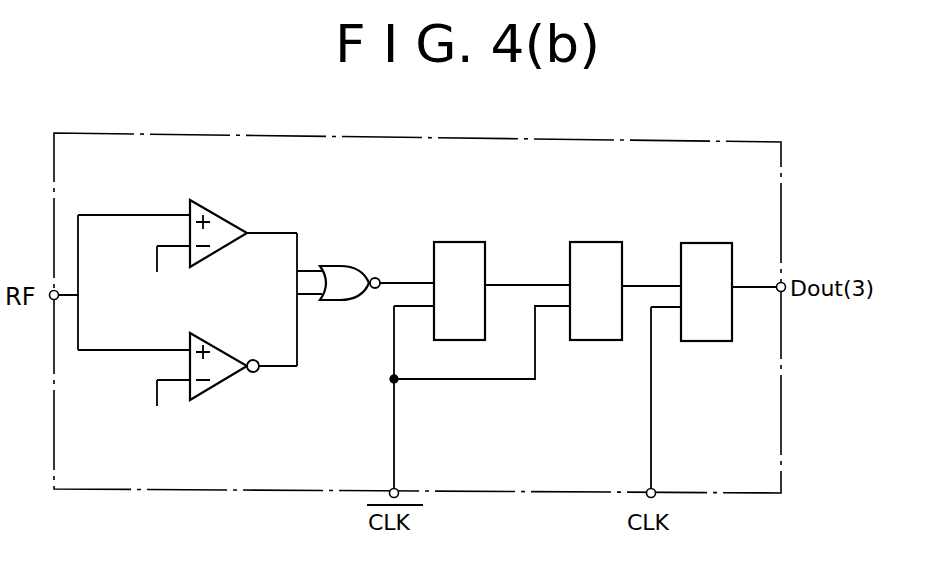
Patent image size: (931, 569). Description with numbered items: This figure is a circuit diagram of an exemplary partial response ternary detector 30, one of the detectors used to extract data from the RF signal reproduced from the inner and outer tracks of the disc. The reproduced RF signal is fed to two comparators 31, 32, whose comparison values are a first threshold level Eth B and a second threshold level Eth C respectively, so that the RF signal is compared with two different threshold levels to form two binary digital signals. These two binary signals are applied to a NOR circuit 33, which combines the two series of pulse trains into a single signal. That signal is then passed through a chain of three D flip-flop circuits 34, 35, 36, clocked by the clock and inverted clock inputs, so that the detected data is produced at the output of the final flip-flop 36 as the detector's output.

The partial response ternary detector 30 is at (640, 141).
The comparator 31 is at (233, 222).
The comparator 32 is at (241, 379).
The NOR circuit 33 is at (352, 266).
The D flip-flop circuit 34 is at (470, 242).
The D flip-flop circuit 35 is at (612, 242).
The D flip-flop circuit 36 is at (722, 243).